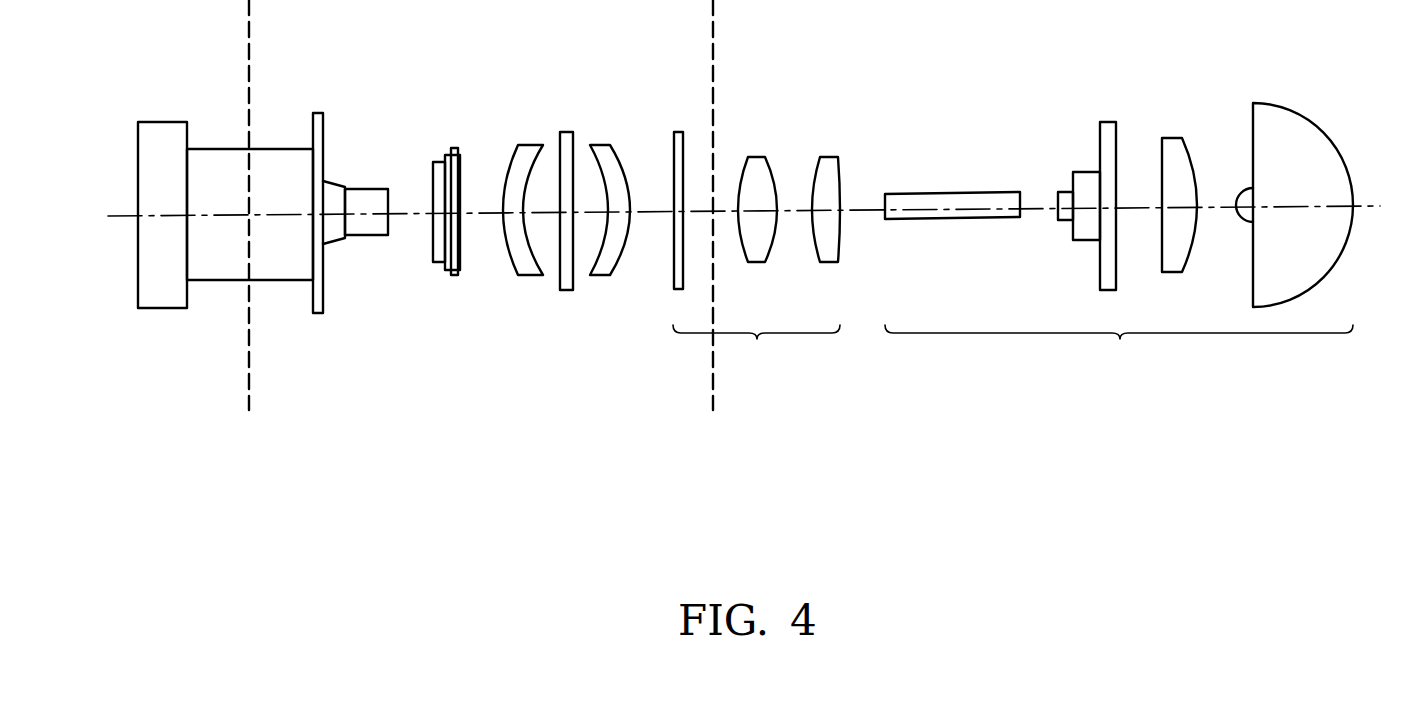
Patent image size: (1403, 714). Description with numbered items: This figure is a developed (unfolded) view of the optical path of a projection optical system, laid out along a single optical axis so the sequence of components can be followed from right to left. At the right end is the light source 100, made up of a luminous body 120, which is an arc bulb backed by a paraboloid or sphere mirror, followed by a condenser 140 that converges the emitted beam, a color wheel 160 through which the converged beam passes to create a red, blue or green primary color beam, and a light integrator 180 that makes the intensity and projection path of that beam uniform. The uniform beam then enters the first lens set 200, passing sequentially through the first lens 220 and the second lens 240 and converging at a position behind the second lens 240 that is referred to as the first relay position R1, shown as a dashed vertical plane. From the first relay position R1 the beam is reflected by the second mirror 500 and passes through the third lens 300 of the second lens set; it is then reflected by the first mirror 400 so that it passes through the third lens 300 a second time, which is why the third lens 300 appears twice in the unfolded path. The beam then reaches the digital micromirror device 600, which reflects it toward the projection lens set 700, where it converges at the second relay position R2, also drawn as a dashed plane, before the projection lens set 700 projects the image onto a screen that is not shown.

The light source 100 is at (1119, 349).
The luminous body 120 is at (1305, 125).
The condenser 140 is at (1173, 145).
The color wheel 160 is at (1108, 122).
The light integrator 180 is at (948, 194).
The first lens set 200 is at (756, 350).
The first lens 220 is at (829, 157).
The second lens 240 is at (757, 157).
The third lens 300 is at (528, 275).
The first mirror 400 is at (565, 132).
The second mirror 500 is at (679, 132).
The digital micromirror device 600 is at (455, 148).
The projection lens set 700 is at (212, 149).
The first relay position R1 is at (713, 420).
The second relay position R2 is at (250, 420).